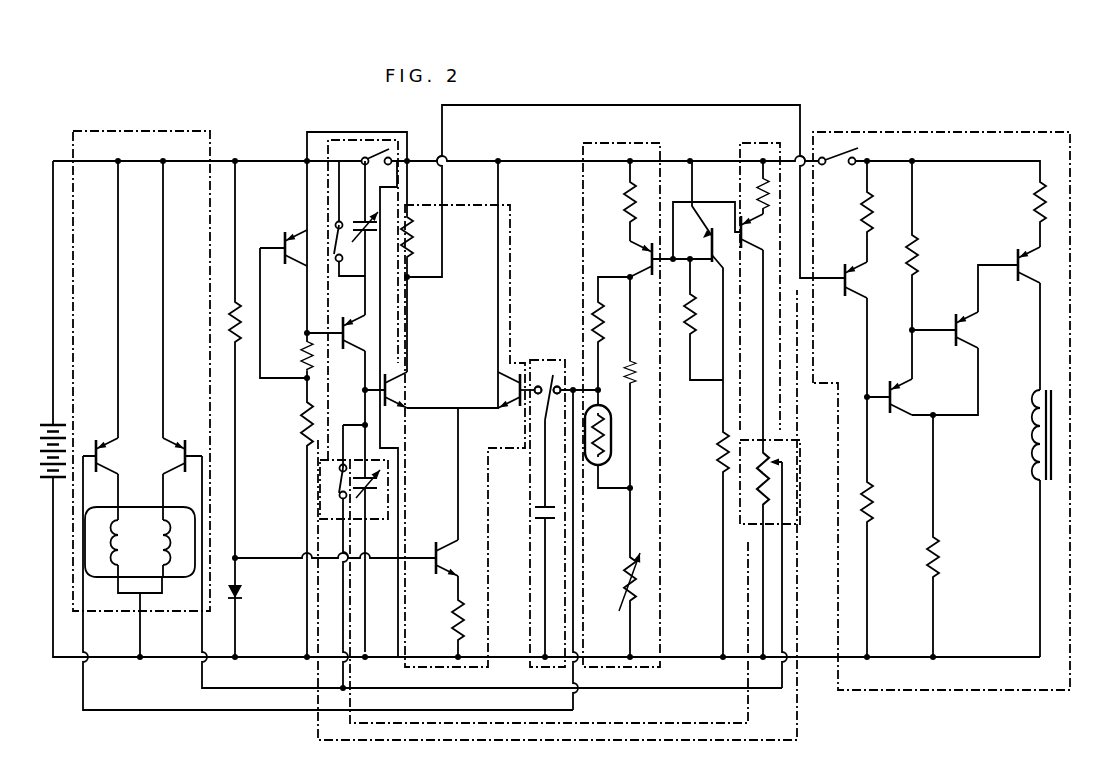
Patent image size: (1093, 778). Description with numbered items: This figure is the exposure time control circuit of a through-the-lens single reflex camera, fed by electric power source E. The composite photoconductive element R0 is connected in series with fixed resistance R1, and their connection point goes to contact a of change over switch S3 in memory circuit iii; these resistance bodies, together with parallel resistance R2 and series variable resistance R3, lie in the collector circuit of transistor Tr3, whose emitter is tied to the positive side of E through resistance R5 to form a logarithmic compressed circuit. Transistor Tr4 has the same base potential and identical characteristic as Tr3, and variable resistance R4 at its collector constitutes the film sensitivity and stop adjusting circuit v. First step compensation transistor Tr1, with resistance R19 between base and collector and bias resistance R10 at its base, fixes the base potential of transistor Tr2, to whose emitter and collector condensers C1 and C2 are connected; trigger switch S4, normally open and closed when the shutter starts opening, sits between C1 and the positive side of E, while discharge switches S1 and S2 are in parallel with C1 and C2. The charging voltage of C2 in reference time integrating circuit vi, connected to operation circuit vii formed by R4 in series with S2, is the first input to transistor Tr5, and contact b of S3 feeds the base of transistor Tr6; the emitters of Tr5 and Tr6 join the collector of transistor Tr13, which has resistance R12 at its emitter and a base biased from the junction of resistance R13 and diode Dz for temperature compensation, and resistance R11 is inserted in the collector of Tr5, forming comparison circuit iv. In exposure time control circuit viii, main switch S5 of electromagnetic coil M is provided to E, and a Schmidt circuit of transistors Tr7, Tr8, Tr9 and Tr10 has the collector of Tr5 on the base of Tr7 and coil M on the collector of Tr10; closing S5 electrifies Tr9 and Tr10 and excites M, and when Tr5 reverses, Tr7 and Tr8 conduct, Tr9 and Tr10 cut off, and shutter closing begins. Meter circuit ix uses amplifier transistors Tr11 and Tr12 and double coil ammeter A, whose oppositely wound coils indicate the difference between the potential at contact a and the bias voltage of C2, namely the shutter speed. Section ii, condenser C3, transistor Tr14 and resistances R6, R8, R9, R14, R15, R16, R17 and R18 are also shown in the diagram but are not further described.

The meter circuit ix is at (108, 128).
The electric power source E is at (40, 455).
The amplifier transistor Tr11 is at (109, 462).
The amplifier transistor Tr12 is at (174, 446).
The double coil ammeter A is at (140, 556).
The resistance R13 is at (230, 318).
The diode Dz is at (242, 592).
The reference time integrating circuit vi is at (356, 128).
The first step compensation transistor Tr1 is at (303, 248).
The transistor Tr2 is at (340, 328).
The resistance R19 is at (304, 348).
The bias resistance R10 is at (302, 420).
The discharge switch S1 is at (343, 252).
The condenser C1 is at (364, 222).
The trigger switch S4 is at (377, 167).
The resistance R11 is at (406, 248).
The transistor Tr5 is at (396, 398).
The transistor Tr6 is at (514, 396).
The discharge switch S2 is at (336, 484).
The condenser C2 is at (378, 472).
The transistor Tr13 is at (442, 570).
The resistance R12 is at (452, 620).
The comparison circuit iv is at (466, 425).
The memory circuit iii is at (541, 502).
The change over switch S3 is at (542, 364).
The contact a is at (562, 380).
The contact b is at (535, 380).
The capacitor C3 is at (536, 508).
The light measuring section ii is at (626, 141).
The resistance R5 is at (624, 206).
The transistor Tr3 is at (646, 262).
The fixed resistance R1 is at (602, 324).
The photoconductive element R0 is at (592, 470).
The resistance R2 is at (636, 386).
The variable resistance R3 is at (622, 576).
The transistor Tr14 is at (706, 216).
The resistor R8 is at (700, 330).
The resistor R9 is at (718, 454).
The adjusting circuit v is at (772, 141).
The resistor R6 is at (760, 184).
The transistor Tr4 is at (765, 248).
The variable resistance R4 is at (782, 490).
The operation circuit vii is at (794, 694).
The exposure time control circuit viii is at (899, 130).
The main switch S5 is at (850, 154).
The resistor R16 is at (868, 220).
The transistor Tr7 is at (859, 282).
The resistor R17 is at (868, 524).
The resistor R14 is at (916, 256).
The transistor Tr8 is at (894, 394).
The transistor Tr9 is at (970, 334).
The resistor R15 is at (951, 536).
The resistor R18 is at (1038, 204).
The transistor Tr10 is at (1039, 318).
The electromagnetic coil M is at (1046, 523).